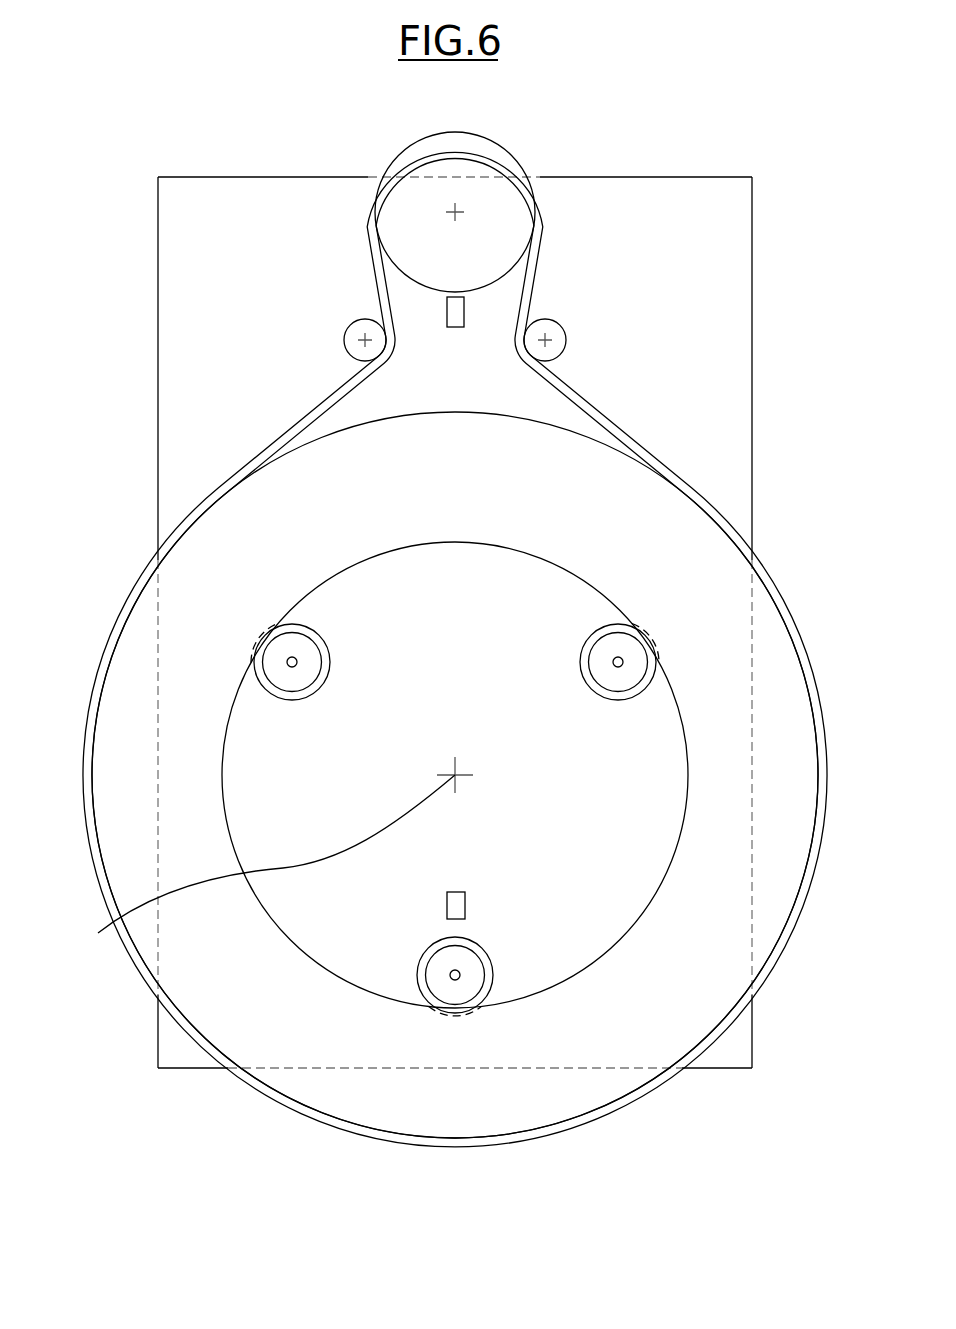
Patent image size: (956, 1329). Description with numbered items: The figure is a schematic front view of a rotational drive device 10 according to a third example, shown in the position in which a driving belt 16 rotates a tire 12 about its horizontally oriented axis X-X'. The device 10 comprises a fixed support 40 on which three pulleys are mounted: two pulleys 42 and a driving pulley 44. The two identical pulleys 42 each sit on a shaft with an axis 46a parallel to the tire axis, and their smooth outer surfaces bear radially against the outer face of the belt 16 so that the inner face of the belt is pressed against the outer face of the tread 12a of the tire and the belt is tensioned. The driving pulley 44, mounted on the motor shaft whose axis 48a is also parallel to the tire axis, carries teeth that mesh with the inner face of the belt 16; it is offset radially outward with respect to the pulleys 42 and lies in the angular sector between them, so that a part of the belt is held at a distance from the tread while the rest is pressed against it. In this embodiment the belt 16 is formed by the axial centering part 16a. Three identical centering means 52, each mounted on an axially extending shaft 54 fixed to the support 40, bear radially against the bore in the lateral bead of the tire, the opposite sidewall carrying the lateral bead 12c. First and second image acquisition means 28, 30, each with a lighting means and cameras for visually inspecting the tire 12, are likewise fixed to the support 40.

The device 10 is at (126, 172).
The fixed support 40 is at (155, 329).
The tire 12 is at (761, 573).
The tread 12a is at (617, 452).
The lateral bead 12c is at (290, 600).
The driving belt 16 is at (606, 411).
The axial centering part 16a is at (680, 483).
The driving pulley 44 is at (407, 164).
The axis of the motor shaft 48a is at (455, 212).
The second image acquisition means 30 is at (447, 311).
The pulleys 42 is at (348, 330).
The axis of the shaft 46a is at (365, 340).
The centering means 52 is at (273, 684).
The shaft 54 is at (292, 662).
The first image acquisition means 28 is at (445, 908).